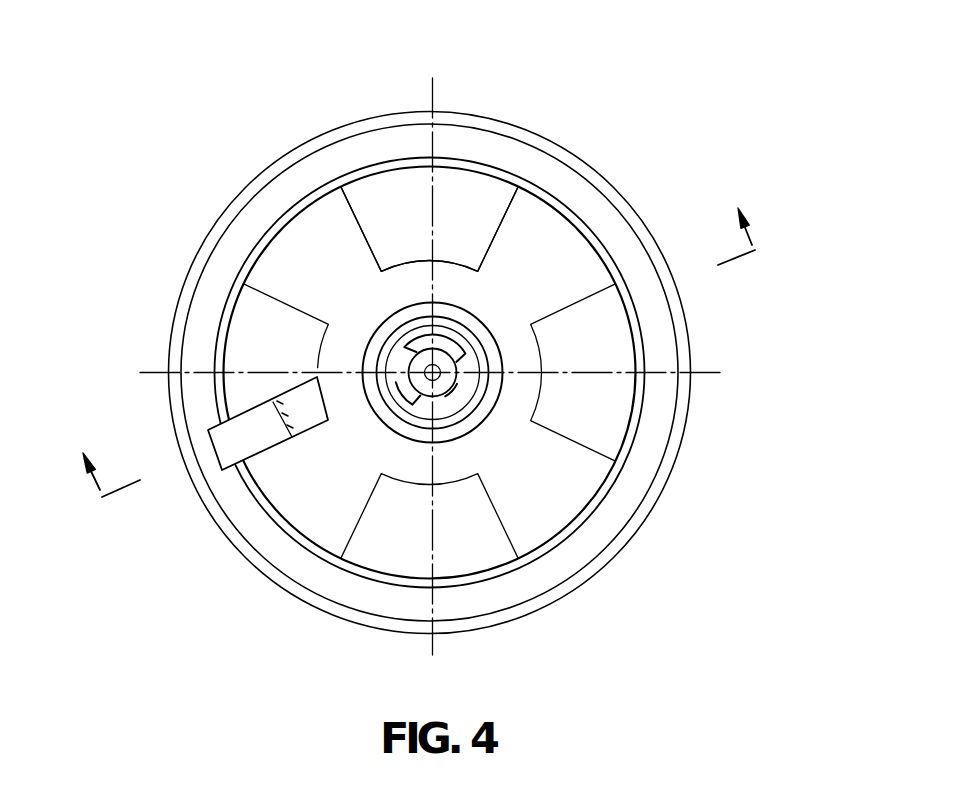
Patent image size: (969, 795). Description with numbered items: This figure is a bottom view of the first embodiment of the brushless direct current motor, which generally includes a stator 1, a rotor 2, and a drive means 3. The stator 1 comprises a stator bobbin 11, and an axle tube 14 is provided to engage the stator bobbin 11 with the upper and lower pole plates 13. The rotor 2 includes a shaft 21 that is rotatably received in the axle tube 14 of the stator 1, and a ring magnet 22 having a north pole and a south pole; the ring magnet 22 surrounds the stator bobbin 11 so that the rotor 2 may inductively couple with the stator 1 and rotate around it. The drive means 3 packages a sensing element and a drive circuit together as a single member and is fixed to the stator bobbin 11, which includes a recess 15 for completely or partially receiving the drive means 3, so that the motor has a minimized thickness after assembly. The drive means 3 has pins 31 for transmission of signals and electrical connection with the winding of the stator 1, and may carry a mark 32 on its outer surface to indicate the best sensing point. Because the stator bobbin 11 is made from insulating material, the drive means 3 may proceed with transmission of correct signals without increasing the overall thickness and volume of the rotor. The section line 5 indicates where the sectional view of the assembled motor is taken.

The stator 1 is at (479, 150).
The rotor 2 is at (583, 163).
The stator bobbin 11 is at (387, 202).
The pole plates 13 is at (288, 260).
The axle tube 14 is at (447, 432).
The recess 15 is at (318, 418).
The shaft 21 is at (443, 383).
The ring magnet 22 is at (645, 463).
The drive means 3 is at (228, 442).
The pins 31 is at (257, 425).
The mark 32 is at (265, 453).
The line 5– 5 is at (412, 325).